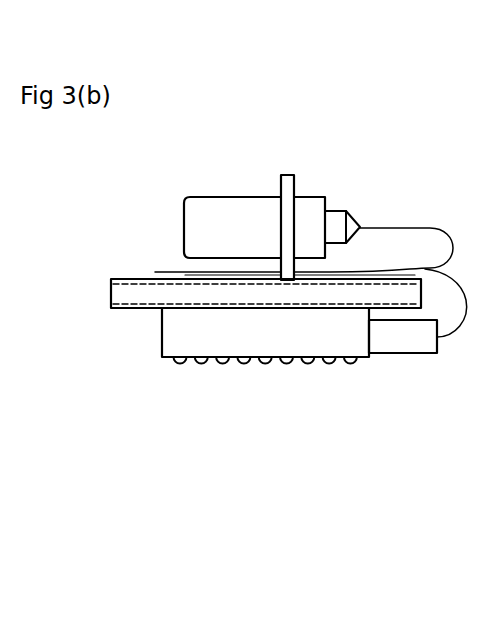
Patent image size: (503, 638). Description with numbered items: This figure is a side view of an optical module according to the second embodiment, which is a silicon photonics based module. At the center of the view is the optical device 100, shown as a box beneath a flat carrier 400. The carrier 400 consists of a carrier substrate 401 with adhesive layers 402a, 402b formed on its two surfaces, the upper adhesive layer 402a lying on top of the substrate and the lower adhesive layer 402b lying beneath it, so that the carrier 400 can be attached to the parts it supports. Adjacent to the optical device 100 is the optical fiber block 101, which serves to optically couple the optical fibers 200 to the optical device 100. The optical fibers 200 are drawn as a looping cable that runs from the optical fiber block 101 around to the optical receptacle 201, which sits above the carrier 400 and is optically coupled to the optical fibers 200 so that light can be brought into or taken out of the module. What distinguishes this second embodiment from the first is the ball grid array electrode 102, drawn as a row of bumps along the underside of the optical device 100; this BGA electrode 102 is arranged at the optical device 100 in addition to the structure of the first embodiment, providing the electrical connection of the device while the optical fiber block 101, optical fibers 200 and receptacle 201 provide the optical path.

The optical device 100 is at (162, 360).
The optical fiber block 101 is at (403, 347).
The ball grid array (BGA) electrode 102 is at (278, 362).
The optical fibers 200 is at (418, 228).
The optical receptacles 201 is at (233, 196).
The carrier 400 is at (228, 296).
The carrier substrate 401 is at (125, 288).
The adhesive layer 402a is at (145, 279).
The adhesive layer 402b is at (260, 337).